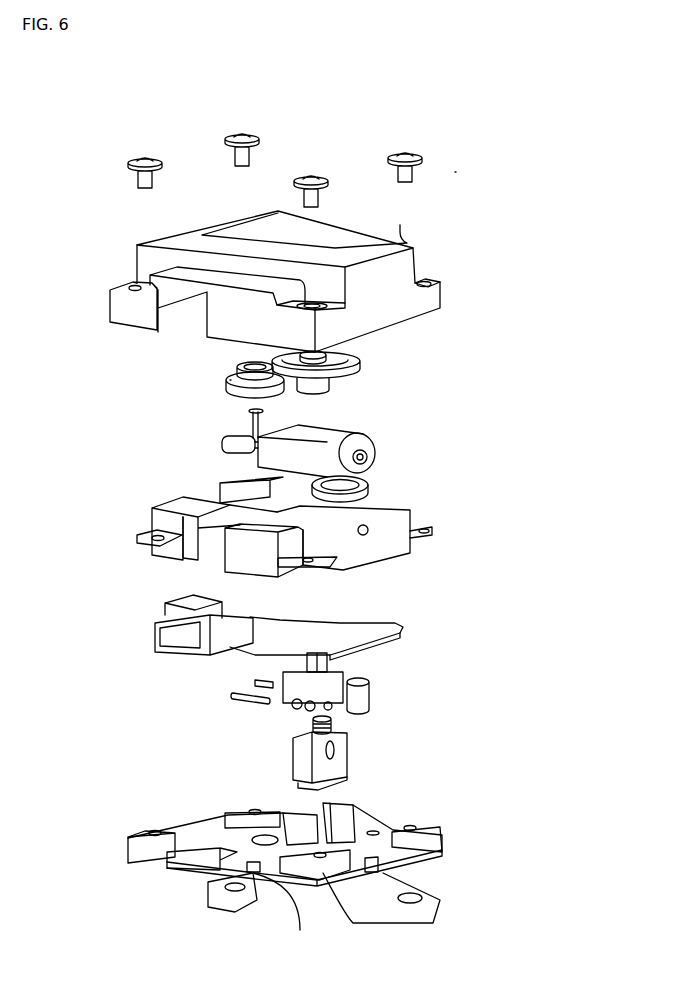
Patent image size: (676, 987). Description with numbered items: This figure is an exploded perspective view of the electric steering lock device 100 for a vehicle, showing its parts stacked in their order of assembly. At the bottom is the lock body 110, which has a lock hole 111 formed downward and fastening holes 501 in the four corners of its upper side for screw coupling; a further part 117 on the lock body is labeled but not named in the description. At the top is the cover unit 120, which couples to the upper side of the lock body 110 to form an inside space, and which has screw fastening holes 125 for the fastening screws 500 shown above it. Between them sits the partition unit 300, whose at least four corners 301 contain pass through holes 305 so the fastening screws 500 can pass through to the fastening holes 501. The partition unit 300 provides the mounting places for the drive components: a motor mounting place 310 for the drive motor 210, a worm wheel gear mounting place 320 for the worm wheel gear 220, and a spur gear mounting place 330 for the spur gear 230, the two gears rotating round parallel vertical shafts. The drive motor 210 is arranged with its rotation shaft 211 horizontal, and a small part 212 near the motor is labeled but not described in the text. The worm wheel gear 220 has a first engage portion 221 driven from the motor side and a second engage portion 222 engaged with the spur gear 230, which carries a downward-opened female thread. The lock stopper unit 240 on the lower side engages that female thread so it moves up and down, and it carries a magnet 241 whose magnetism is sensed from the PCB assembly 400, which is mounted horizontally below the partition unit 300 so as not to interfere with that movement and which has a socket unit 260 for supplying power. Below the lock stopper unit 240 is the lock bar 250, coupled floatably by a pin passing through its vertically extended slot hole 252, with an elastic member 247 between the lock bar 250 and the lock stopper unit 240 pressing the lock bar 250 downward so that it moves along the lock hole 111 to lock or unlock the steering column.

The electric steering lock device 100 is at (455, 173).
The fastening screws 500 is at (146, 160).
The cover unit 120 is at (405, 312).
The screw fastening holes 125 is at (135, 287).
The worm wheel gear 220 is at (95, 342).
The second engage portion 222 is at (228, 374).
The first engage portion 221 is at (228, 392).
The spur gear 230 is at (360, 365).
The drive motor 210 is at (340, 427).
The motor pin 212 is at (248, 438).
The rotation shaft 211 is at (223, 453).
The partition unit 300 is at (413, 522).
The worm wheel gear mounting place 320 is at (222, 488).
The spur gear mounting place 330 is at (365, 485).
The pass through holes 305 is at (185, 520).
The corners 301 is at (150, 538).
The motor mounting place 310 is at (343, 538).
The socket unit 260 is at (170, 625).
The PCB assembly 400 is at (395, 625).
The magnet 241 is at (250, 690).
The lock stopper unit 240 is at (370, 665).
The lock bar 250 is at (340, 772).
The elastic member 247 is at (310, 727).
The slot hole 252 is at (326, 757).
The lock body 110 is at (420, 847).
The fastening holes 501 is at (255, 811).
The lock hole 111 is at (333, 827).
The base mounting ear 117 is at (373, 863).